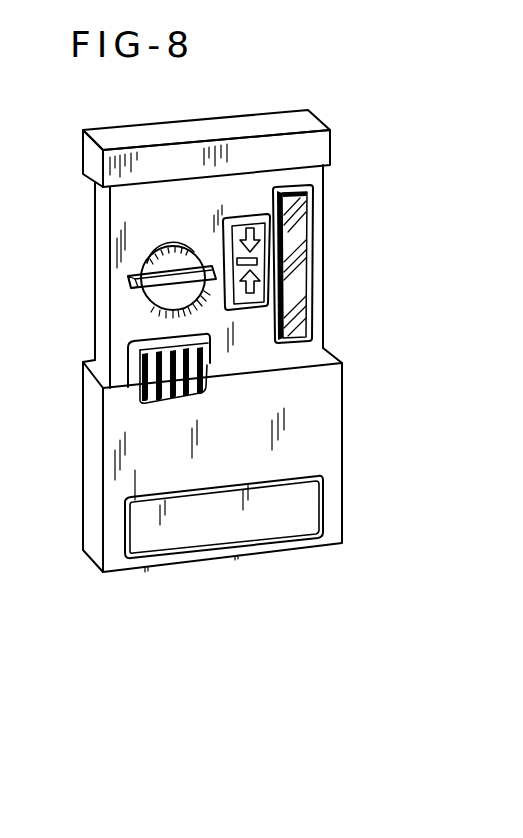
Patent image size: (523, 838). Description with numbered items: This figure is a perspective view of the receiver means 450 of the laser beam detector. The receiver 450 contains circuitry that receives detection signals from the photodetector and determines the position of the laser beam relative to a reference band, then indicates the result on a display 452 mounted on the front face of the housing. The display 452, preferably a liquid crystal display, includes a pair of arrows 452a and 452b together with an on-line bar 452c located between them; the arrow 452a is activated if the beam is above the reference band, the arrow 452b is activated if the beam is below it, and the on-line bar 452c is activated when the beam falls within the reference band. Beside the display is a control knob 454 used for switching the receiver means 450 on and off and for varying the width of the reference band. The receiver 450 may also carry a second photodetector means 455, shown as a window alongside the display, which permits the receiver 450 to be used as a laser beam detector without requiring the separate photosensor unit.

The receiver means 450 is at (344, 455).
The display 452 is at (248, 204).
The arrow 452a is at (223, 238).
The arrow 452b is at (253, 287).
The on-line bar 452c is at (257, 262).
The control knob 454 is at (160, 303).
The second photodetector means 455 is at (298, 232).